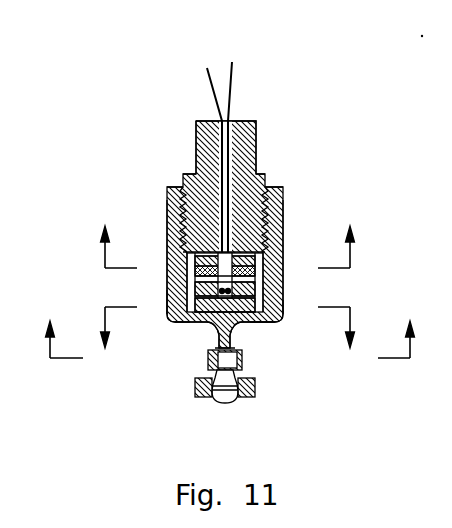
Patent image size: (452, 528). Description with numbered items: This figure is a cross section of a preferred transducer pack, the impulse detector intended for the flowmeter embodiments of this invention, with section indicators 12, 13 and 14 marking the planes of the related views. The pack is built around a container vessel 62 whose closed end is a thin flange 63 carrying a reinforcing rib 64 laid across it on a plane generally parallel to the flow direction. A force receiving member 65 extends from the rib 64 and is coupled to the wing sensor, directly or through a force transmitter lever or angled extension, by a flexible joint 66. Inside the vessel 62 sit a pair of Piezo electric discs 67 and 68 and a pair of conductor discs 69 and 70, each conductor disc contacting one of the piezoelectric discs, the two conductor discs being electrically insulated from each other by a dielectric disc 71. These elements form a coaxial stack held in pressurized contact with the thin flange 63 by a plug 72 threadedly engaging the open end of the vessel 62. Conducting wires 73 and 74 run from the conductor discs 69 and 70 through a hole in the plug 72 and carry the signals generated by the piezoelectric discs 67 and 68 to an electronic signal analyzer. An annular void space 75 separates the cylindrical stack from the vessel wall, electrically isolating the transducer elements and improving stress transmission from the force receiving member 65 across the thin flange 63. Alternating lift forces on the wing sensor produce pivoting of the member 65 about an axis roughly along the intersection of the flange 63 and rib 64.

The section line 12- 12 is at (233, 326).
The section line 13- 13 is at (229, 342).
The section line 14- 14 is at (229, 234).
The container vessel 62 is at (283, 232).
The thin flange 63 is at (193, 323).
The reinforcing rib 64 is at (217, 336).
The force receiving member 65 is at (243, 357).
The flexible joint 66 is at (226, 403).
The Piezo electric disc 67 is at (279, 323).
The Piezo electric disc 68 is at (190, 290).
The conductor disc 69 is at (283, 312).
The conductor disc 70 is at (165, 262).
The dielectric disc 71 is at (283, 275).
The plug 72 is at (196, 144).
The conducting wire 73 is at (212, 86).
The conducting wire 74 is at (236, 85).
The annular void space 75 is at (167, 298).